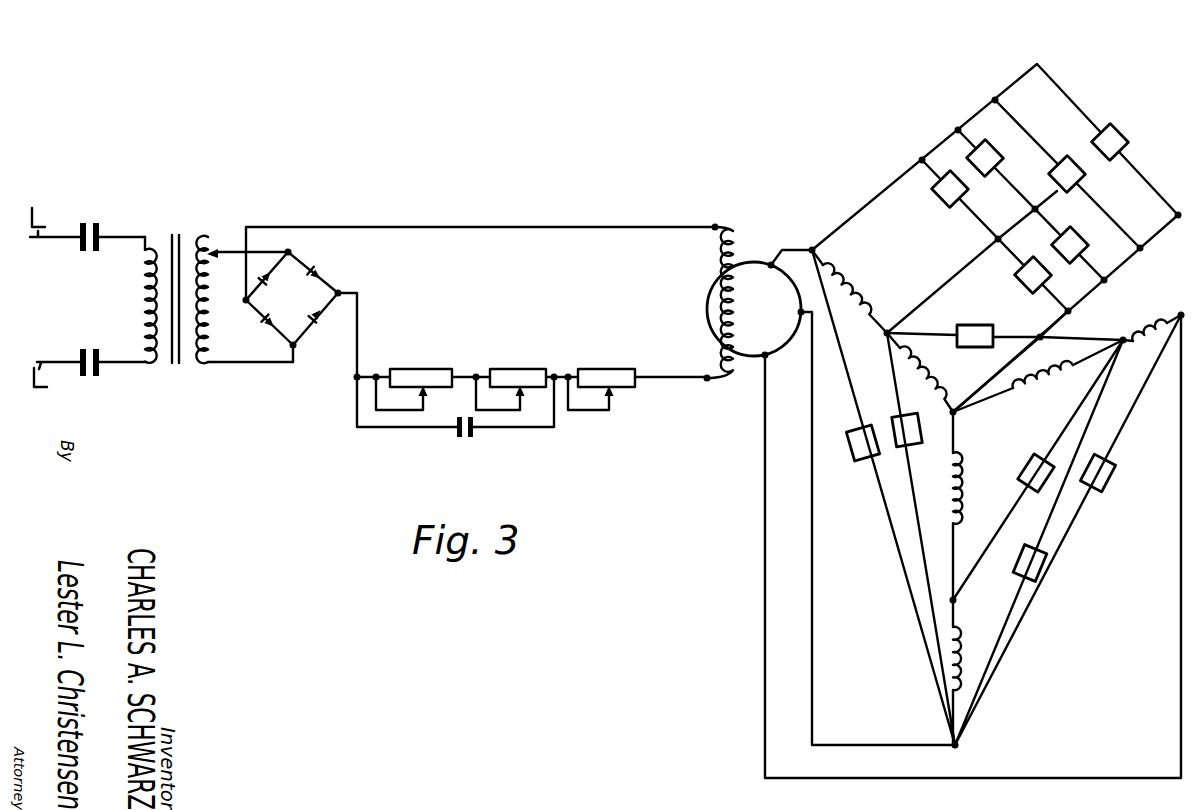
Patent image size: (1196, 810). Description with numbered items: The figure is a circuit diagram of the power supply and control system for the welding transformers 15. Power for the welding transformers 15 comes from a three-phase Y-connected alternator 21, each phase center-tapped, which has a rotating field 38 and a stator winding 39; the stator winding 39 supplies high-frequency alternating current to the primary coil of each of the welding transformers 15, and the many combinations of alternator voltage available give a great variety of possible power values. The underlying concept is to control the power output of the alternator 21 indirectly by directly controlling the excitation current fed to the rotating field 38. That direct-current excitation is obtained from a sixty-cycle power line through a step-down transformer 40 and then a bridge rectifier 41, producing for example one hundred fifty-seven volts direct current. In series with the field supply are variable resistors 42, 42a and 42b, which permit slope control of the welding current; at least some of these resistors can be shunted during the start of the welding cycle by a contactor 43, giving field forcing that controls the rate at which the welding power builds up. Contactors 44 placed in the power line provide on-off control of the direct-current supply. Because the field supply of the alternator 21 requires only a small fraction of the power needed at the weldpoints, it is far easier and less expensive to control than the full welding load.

The welding transformer 15 is at (1118, 140).
The alternator 21 is at (944, 499).
The rotating field 38 is at (738, 222).
The stator winding 39 is at (761, 242).
The step-down transformer 40 is at (163, 242).
The bridge rectifier 41 is at (332, 288).
The variable resistor 42 is at (434, 353).
The variable resistor 42a is at (524, 353).
The variable resistor 42b is at (617, 355).
The contactor 43 is at (465, 440).
The contactor 44 is at (95, 223).